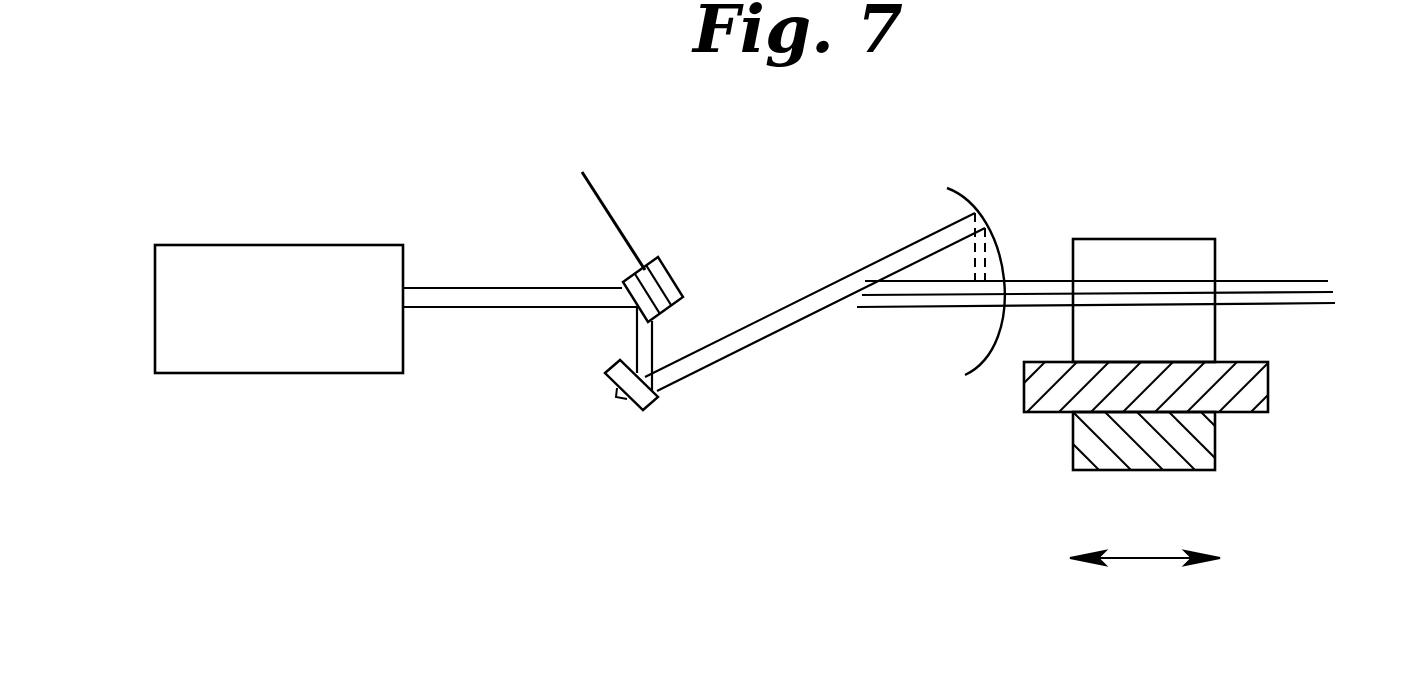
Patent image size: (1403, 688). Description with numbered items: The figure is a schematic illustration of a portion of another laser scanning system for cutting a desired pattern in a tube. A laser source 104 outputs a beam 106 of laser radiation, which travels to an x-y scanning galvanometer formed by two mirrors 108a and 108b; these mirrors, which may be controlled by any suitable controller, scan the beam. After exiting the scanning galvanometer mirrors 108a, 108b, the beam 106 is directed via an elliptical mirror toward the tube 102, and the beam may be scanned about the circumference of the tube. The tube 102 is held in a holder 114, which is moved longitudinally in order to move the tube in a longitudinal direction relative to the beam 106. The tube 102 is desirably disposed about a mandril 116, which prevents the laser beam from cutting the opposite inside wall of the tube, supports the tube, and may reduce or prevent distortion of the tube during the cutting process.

The tube 102 is at (1030, 308).
The laser source 104 is at (308, 373).
The beam 106 is at (527, 307).
The scanning galvanometer mirror 108a is at (668, 265).
The scanning galvanometer mirror 108b is at (643, 408).
The holder 114 is at (1172, 470).
The mandril 116 is at (1328, 288).